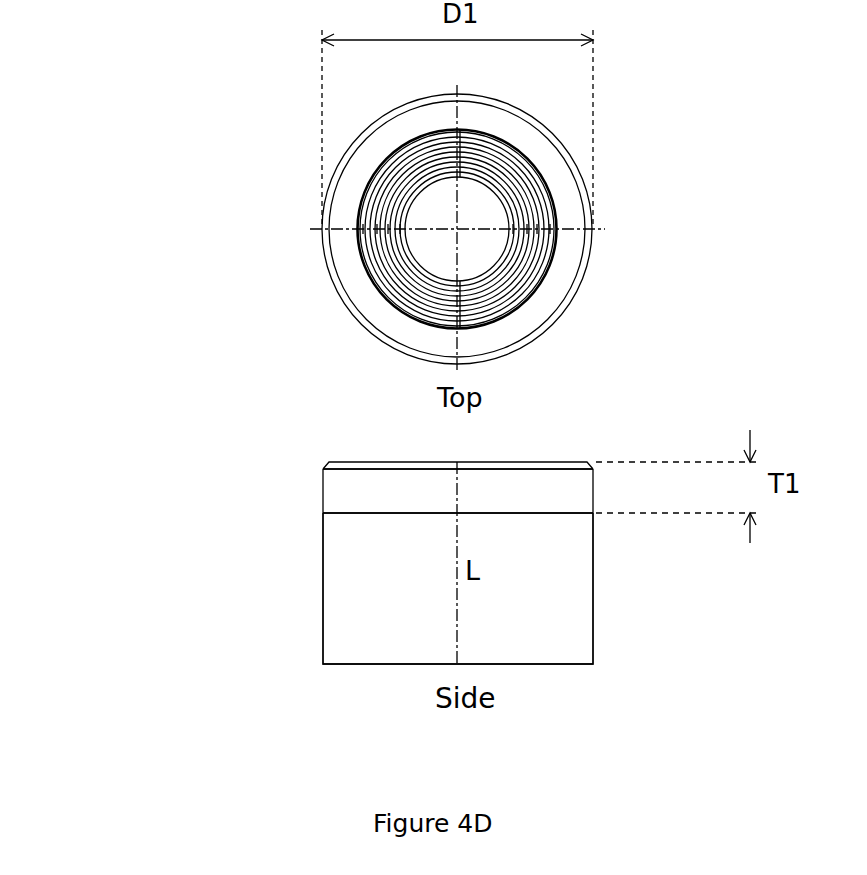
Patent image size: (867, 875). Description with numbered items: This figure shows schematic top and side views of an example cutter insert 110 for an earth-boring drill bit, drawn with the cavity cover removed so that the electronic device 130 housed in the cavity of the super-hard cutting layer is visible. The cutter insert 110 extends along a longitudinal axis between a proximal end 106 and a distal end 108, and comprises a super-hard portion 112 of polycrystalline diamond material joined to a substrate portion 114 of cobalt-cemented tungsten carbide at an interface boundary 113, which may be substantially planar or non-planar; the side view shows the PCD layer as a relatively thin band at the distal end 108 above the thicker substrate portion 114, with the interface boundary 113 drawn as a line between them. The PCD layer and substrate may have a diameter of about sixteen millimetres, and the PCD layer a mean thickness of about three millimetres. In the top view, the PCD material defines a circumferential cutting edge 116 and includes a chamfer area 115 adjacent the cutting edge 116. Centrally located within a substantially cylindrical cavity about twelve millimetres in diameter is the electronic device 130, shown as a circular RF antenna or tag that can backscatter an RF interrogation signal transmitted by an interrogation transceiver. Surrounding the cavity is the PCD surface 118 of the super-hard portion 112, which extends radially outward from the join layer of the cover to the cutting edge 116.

The proximal end 106 is at (565, 672).
The distal end 108 is at (565, 452).
The cutter insert 110 is at (178, 182).
The super-hard portion 112 is at (347, 497).
The interface boundary 113 is at (370, 518).
The substrate portion 114 is at (338, 628).
The chamfer area 115 is at (585, 200).
The cutting edge 116 is at (553, 143).
The PCD surface 118 is at (360, 167).
The electronic device 130 is at (348, 243).